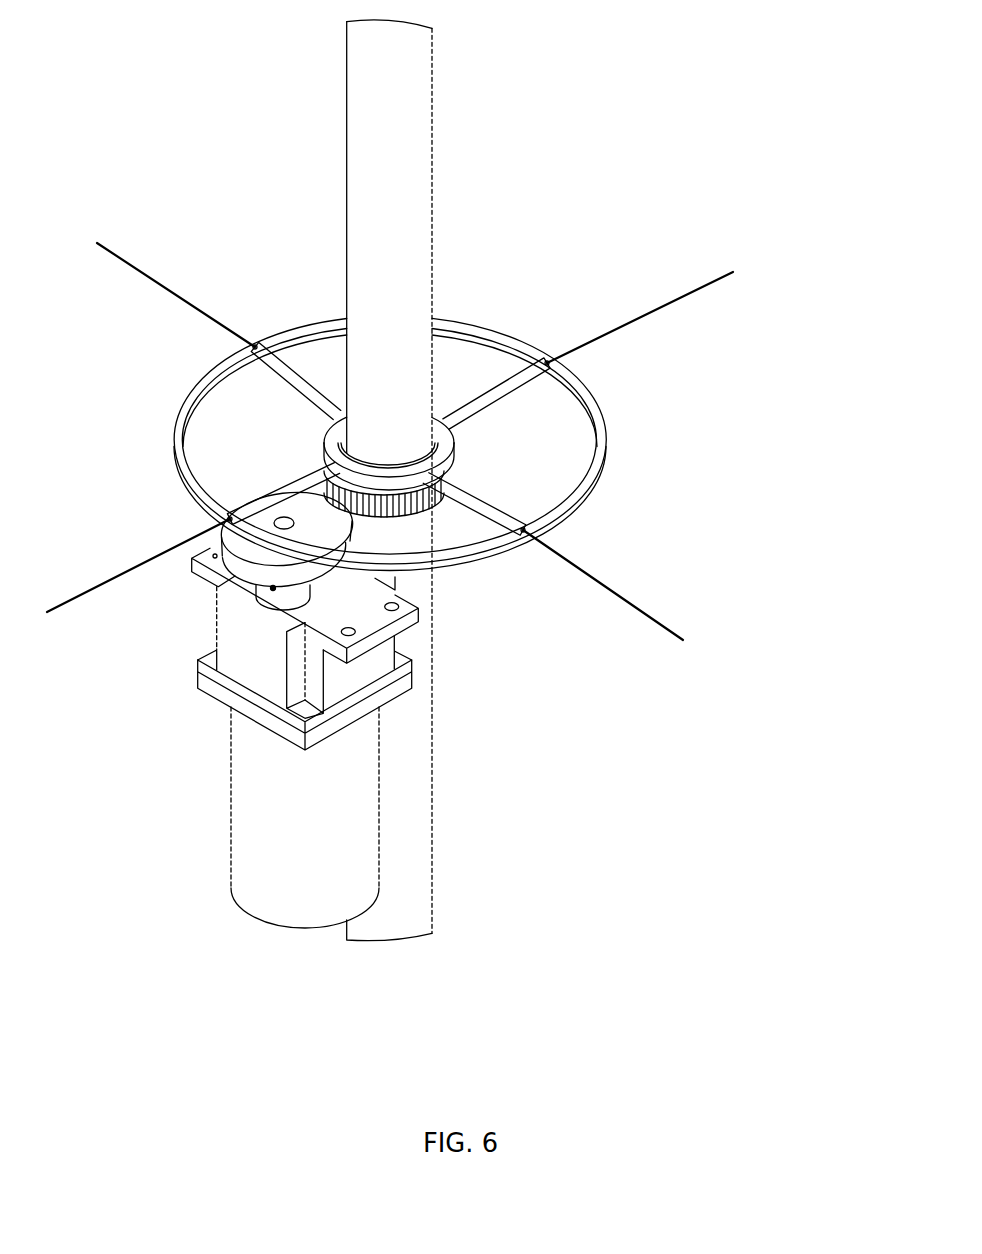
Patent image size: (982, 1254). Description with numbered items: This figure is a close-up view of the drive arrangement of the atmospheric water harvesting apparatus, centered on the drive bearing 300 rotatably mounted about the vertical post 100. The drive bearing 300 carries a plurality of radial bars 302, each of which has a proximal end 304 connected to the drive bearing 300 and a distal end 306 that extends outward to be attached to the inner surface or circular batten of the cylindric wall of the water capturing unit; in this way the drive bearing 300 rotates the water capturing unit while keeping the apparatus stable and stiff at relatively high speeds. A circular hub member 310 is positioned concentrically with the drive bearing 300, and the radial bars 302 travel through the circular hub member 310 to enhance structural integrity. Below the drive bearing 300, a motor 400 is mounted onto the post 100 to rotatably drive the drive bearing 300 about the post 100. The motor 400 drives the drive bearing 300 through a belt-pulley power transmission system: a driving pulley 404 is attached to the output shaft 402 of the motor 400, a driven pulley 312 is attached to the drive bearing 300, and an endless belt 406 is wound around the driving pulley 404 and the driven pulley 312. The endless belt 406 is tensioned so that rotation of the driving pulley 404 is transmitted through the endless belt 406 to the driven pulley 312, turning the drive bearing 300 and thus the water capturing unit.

The post 100 is at (422, 100).
The drive bearing 300 is at (322, 437).
The radial bars 302 is at (610, 335).
The proximal end 304 is at (459, 428).
The distal end 306 is at (739, 268).
The circular hub member 310 is at (593, 491).
The driven pulley 312 is at (437, 517).
The motor 400 is at (248, 827).
The output shaft 402 is at (232, 518).
The driving pulley 404 is at (219, 548).
The endless belt 406 is at (377, 537).